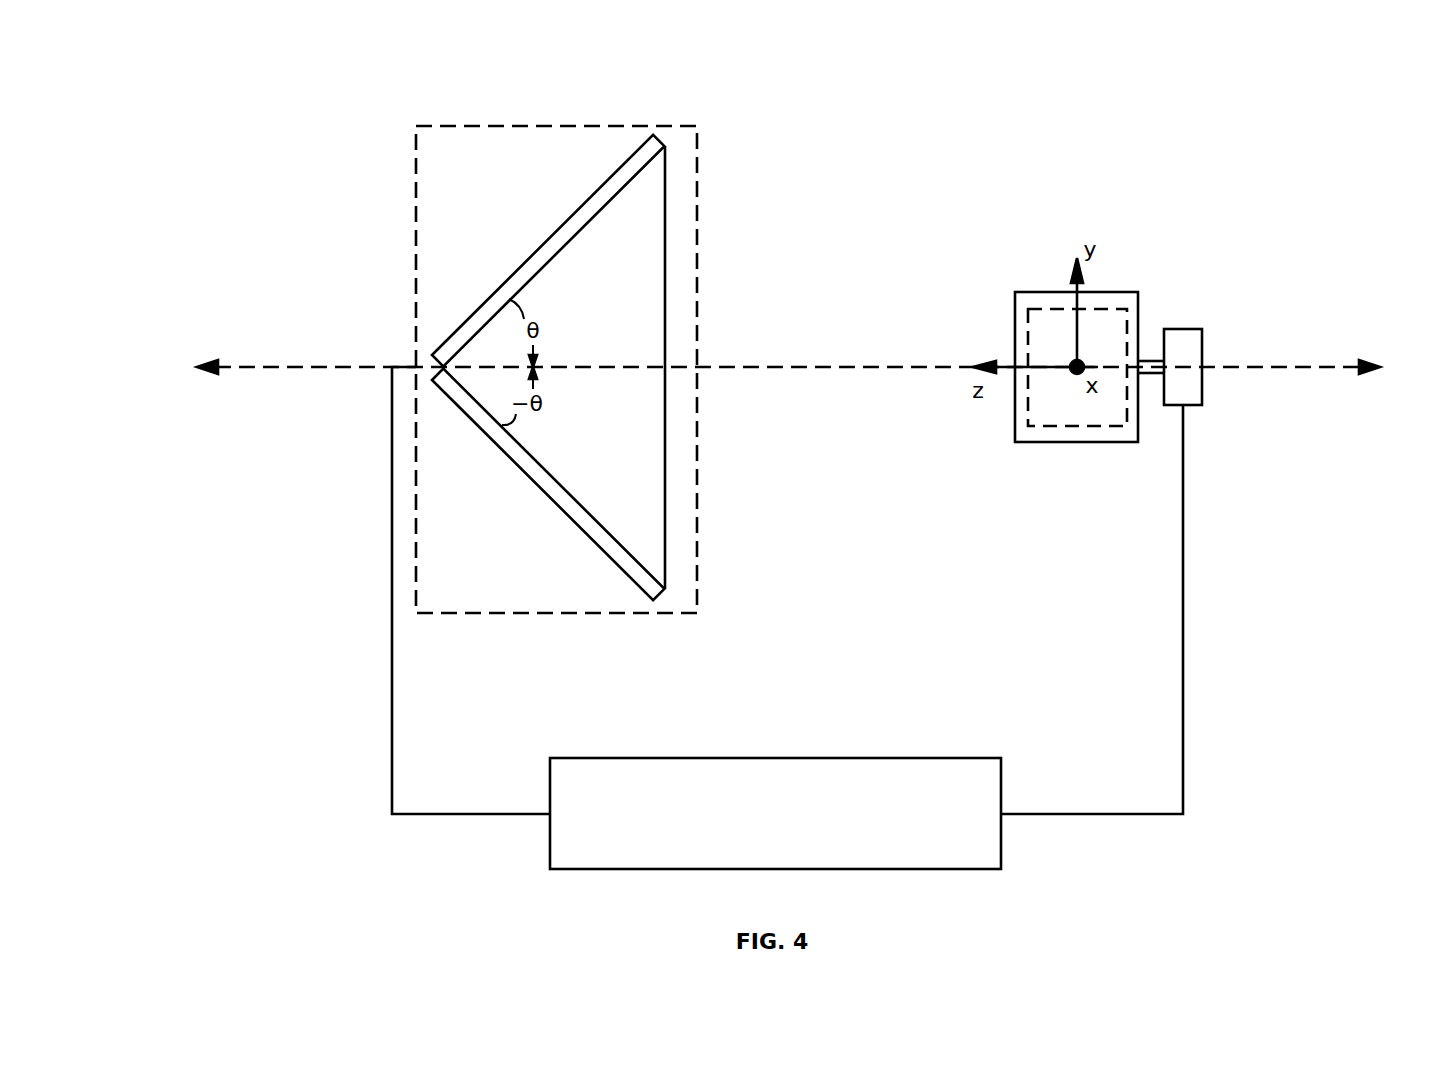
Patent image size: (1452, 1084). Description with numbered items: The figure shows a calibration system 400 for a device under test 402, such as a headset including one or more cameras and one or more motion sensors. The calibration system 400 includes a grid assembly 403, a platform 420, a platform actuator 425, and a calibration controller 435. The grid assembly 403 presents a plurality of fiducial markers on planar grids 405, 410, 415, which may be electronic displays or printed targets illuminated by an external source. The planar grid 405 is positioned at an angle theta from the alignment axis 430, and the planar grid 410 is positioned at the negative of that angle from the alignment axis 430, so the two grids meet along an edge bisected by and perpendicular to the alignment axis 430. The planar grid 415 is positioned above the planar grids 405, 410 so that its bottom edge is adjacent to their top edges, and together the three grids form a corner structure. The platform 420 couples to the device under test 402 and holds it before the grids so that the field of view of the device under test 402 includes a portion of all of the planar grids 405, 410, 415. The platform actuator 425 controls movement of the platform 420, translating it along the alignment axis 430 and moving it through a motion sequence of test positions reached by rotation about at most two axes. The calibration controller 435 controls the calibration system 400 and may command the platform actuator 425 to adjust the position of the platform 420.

The calibration system 400 is at (170, 158).
The device under test 402 is at (1113, 307).
The grid assembly 403 is at (415, 193).
The planar grid 405 is at (568, 218).
The planar grid 410 is at (585, 535).
The planar grid 415 is at (642, 487).
The platform 420 is at (1035, 292).
The platform actuator 425 is at (1202, 385).
The alignment axis 430 is at (265, 367).
The calibration controller 435 is at (761, 842).